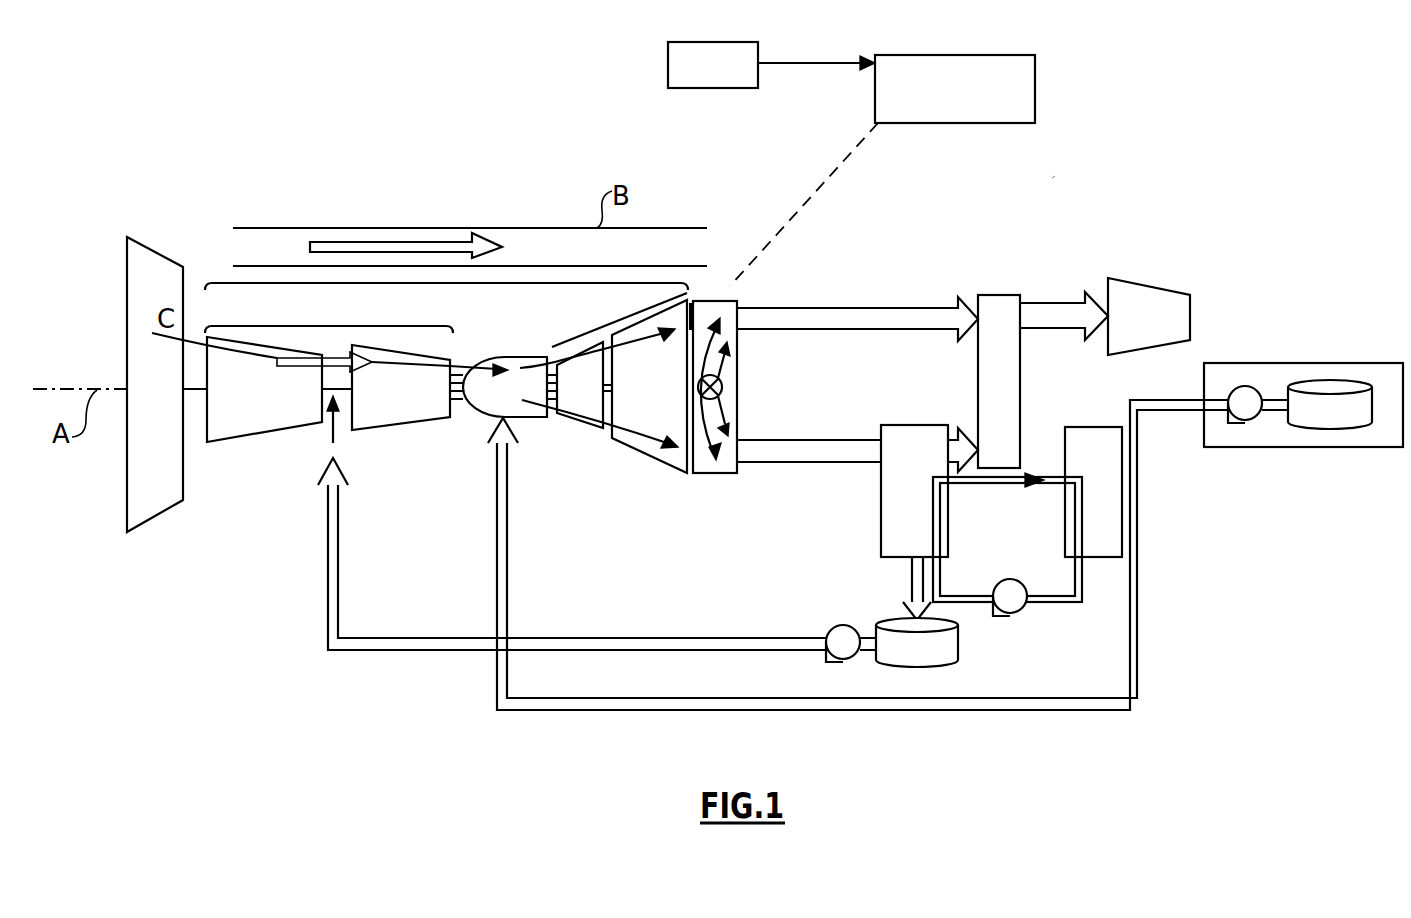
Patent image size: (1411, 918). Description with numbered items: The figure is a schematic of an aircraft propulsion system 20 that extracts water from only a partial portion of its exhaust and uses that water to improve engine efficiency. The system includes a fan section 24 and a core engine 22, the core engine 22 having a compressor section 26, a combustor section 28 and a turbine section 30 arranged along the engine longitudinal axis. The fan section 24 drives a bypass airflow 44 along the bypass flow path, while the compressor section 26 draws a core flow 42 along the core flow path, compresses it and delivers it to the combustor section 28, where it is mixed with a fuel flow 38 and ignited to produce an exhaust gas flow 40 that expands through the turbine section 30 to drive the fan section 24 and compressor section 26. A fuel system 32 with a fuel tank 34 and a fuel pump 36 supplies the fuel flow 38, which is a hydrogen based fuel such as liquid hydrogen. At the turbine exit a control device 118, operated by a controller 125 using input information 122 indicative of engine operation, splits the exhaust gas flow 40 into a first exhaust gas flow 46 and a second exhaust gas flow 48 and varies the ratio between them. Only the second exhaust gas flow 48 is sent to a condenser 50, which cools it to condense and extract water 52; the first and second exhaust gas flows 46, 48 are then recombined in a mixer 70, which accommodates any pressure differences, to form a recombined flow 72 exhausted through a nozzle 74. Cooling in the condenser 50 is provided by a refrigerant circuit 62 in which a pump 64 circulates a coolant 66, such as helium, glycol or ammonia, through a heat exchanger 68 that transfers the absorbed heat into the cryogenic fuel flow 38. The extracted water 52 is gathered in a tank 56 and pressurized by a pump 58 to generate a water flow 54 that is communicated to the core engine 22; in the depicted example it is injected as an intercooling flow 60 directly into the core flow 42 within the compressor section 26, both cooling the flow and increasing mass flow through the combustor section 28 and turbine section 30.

The propulsion system 20 is at (1052, 178).
The core engine 22 is at (445, 282).
The fan section 24 is at (170, 523).
The compressor section 26 is at (337, 325).
The combustor section 28 is at (485, 362).
The turbine section 30 is at (610, 330).
The fuel system 32 is at (1298, 363).
The fuel tank 34 is at (1330, 428).
The fuel pump 36 is at (1245, 421).
The fuel flow 38 is at (1137, 608).
The exhaust gas flow 40 is at (641, 337).
The core flow 42 is at (280, 360).
The bypass airflow 44 is at (347, 245).
The first exhaust gas flow 46 is at (800, 318).
The second exhaust gas flow 48 is at (765, 448).
The condenser 50 is at (881, 493).
The water 52 is at (907, 578).
The water flow 54 is at (647, 638).
The tank 56 is at (957, 647).
The pump 58 is at (850, 658).
The intercooling flow 60 is at (343, 441).
The refrigerant circuit 62 is at (1065, 600).
The pump 64 is at (1013, 583).
The coolant 66 is at (1030, 477).
The heat exchanger 68 is at (1090, 437).
The mixer 70 is at (985, 295).
The recombined flow 72 is at (1050, 303).
The nozzle 74 is at (1183, 294).
The control device 118 is at (725, 372).
The input information 122 is at (668, 68).
The controller 125 is at (968, 123).